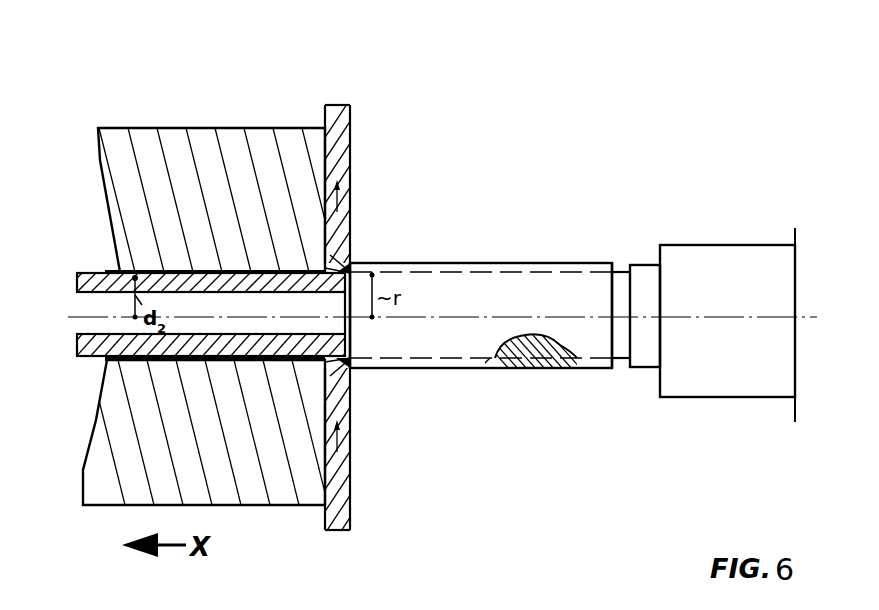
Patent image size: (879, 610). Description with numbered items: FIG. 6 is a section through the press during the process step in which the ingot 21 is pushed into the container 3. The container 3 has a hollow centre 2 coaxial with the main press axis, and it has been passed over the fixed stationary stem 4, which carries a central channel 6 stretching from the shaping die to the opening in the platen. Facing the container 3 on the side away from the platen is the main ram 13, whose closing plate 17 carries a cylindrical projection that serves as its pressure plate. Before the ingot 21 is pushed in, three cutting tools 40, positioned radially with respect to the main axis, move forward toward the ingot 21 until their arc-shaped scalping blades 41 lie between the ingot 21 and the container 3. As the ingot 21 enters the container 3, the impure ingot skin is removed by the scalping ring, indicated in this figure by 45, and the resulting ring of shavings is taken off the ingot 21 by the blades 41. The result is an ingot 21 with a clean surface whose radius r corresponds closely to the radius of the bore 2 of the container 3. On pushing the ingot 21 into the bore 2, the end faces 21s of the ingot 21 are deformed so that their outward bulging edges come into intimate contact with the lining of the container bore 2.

The hollow centre 2 is at (130, 272).
The container 3 is at (170, 143).
The stem 4 is at (95, 347).
The central channel 6 is at (225, 331).
The main ram 13 is at (705, 262).
The closing plate 17 is at (618, 350).
The ingot 21 is at (498, 309).
The end faces 21s is at (612, 297).
The cutting tools 40 is at (345, 155).
The scalping blade 41 is at (350, 270).
The scalping ring 45 is at (553, 368).